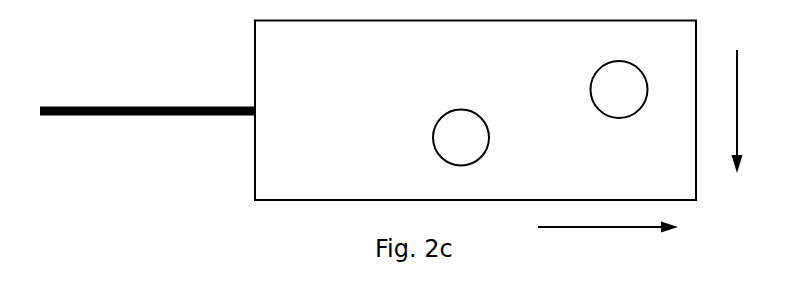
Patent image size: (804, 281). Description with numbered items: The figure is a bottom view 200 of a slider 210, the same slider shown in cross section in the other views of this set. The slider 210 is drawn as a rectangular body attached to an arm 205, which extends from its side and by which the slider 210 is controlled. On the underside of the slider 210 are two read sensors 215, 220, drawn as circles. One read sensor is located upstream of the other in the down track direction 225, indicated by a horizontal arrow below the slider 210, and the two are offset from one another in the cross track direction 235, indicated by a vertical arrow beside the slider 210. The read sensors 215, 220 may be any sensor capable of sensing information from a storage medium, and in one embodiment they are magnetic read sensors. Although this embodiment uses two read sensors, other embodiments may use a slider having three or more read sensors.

The bottom view 200 is at (131, 88).
The arm 205 is at (100, 116).
The slider 210 is at (325, 60).
The read sensor 215 is at (446, 146).
The read sensor 220 is at (604, 98).
The down track direction 225 is at (590, 228).
The cross track direction 235 is at (738, 97).